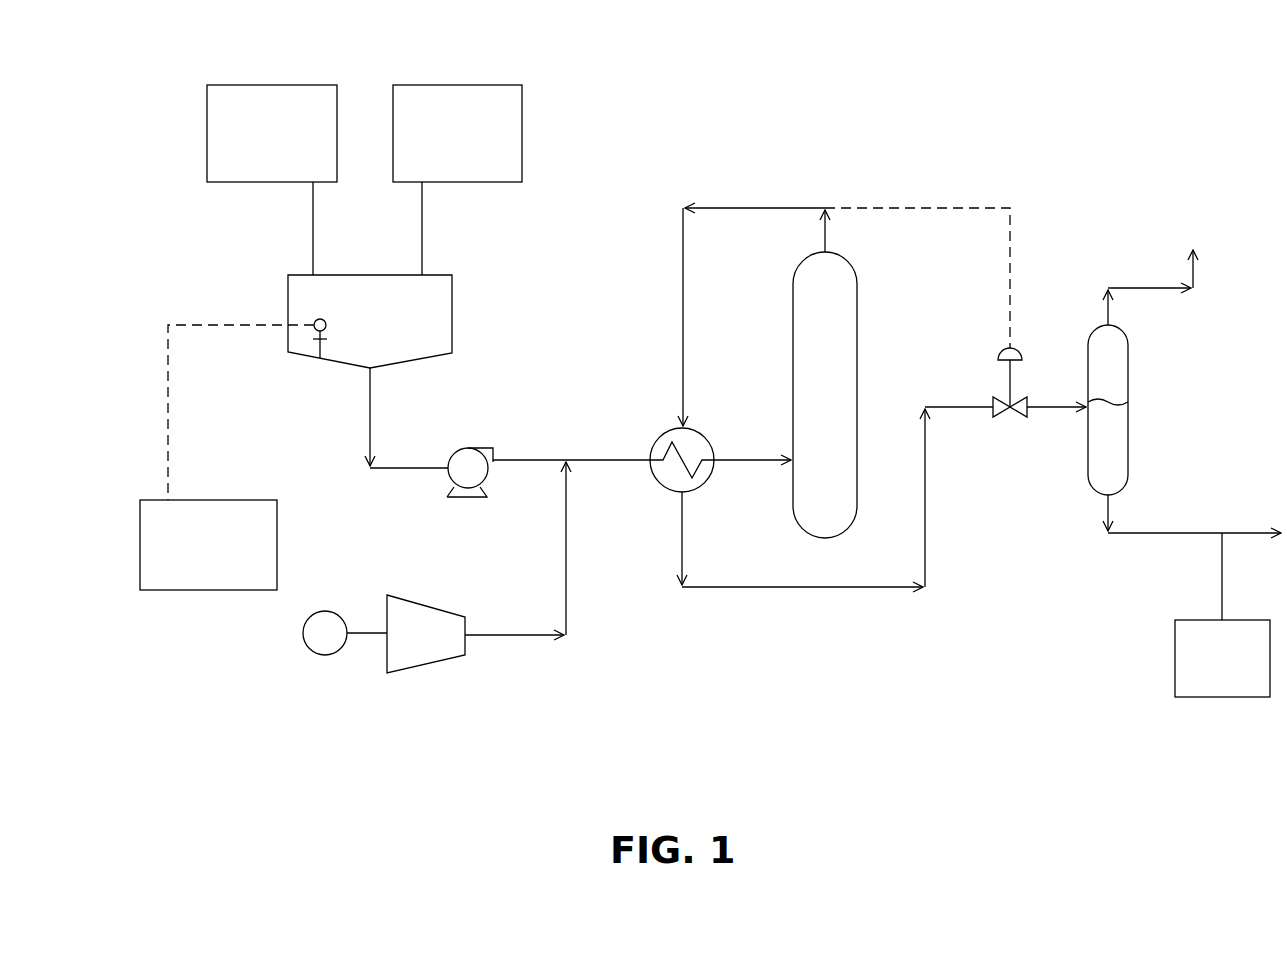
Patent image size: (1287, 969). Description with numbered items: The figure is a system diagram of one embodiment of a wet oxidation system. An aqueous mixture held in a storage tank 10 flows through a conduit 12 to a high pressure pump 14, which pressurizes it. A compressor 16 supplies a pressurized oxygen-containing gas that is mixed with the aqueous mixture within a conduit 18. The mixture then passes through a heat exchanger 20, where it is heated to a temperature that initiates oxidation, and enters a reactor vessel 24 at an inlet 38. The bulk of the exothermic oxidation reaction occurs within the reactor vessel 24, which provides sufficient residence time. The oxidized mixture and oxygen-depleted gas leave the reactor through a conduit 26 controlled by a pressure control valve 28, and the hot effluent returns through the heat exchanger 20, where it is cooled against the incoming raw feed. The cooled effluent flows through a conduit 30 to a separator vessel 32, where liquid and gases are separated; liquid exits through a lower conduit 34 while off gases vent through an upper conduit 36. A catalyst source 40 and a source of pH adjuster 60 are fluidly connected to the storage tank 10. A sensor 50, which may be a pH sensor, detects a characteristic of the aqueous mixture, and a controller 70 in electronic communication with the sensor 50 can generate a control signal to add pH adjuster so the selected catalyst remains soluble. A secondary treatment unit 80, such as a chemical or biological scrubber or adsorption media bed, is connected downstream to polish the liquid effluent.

The storage tank 10 is at (452, 275).
The conduit 12 is at (368, 420).
The high pressure pump 14 is at (460, 490).
The compressor 16 is at (410, 600).
The conduit 18 is at (603, 462).
The heat exchanger 20 is at (665, 428).
The reactor vessel 24 is at (857, 275).
The conduit 26 is at (787, 207).
The pressure control valve 28 is at (1000, 360).
The conduit 30 is at (927, 510).
The separator vessel 32 is at (1130, 357).
The lower conduit 34 is at (1150, 533).
The upper conduit 36 is at (1150, 288).
The inlet 38 is at (792, 455).
The catalyst source 40 is at (522, 85).
The sensor 50 is at (315, 322).
The source of pH adjuster 60 is at (207, 85).
The controller 70 is at (140, 500).
The secondary treatment unit 80 is at (1175, 697).